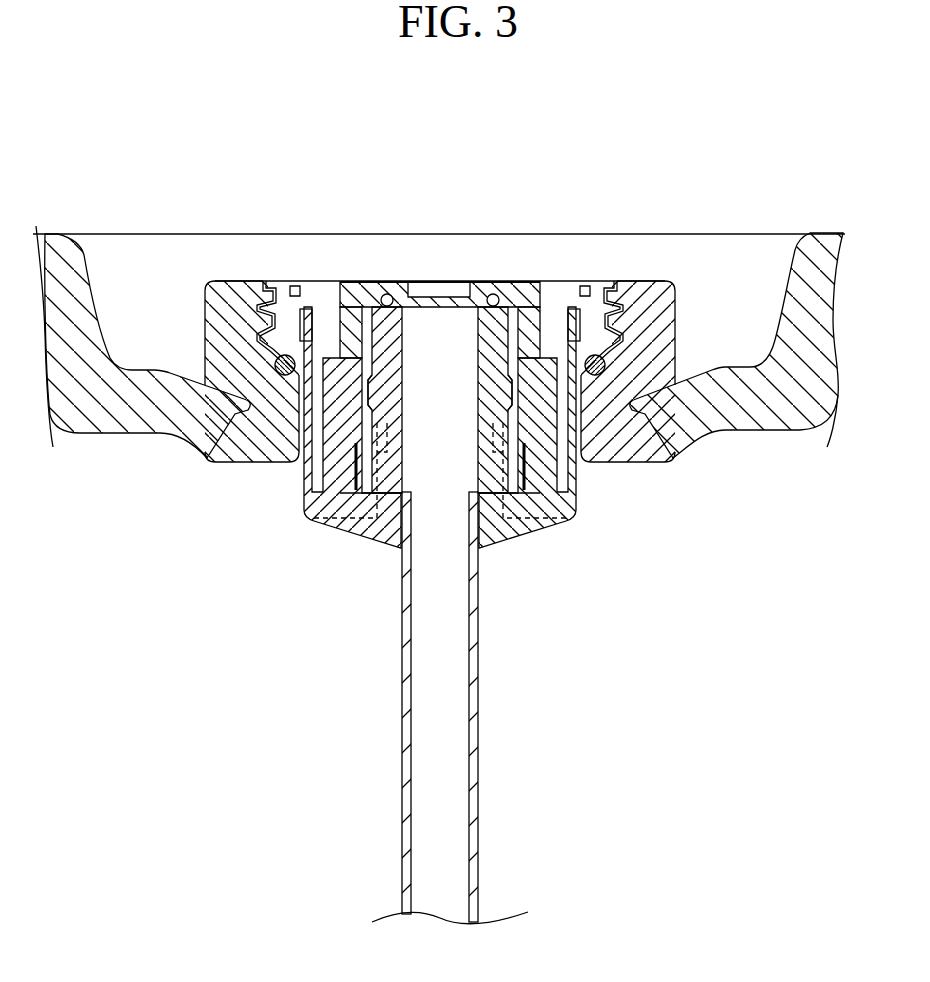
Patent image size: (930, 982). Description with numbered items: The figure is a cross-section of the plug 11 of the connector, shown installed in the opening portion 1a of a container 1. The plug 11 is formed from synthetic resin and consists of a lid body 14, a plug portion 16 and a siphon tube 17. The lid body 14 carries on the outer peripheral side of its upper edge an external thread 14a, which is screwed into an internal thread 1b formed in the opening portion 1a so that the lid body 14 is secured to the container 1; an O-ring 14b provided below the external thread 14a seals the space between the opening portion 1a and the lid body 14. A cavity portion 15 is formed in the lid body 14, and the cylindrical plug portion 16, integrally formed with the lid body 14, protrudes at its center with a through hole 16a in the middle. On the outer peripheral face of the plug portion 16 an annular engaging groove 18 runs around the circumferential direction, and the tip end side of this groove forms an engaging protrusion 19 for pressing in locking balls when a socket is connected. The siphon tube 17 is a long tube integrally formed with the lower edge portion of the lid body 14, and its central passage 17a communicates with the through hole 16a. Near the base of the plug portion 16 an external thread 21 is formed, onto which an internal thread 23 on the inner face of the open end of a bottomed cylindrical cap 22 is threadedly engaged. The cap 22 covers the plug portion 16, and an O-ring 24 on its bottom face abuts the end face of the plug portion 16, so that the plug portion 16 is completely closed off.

The container 1 is at (835, 230).
The opening portion 1a is at (622, 280).
The internal thread 1b is at (287, 293).
The plug 11 is at (473, 188).
The lid body 14 is at (303, 508).
The external thread 14a is at (267, 336).
The O-ring 14b is at (280, 372).
The cavity portion 15 is at (553, 486).
The plug portion 16 is at (490, 403).
The through hole 16a is at (412, 495).
The siphon tube 17 is at (481, 672).
The passage 17a is at (411, 645).
The engaging groove 18 is at (303, 472).
The engaging protrusion 19 is at (370, 384).
The external thread 21 is at (352, 490).
The cap 22 is at (512, 282).
The internal thread 23 is at (498, 480).
The O-ring 24 is at (387, 294).